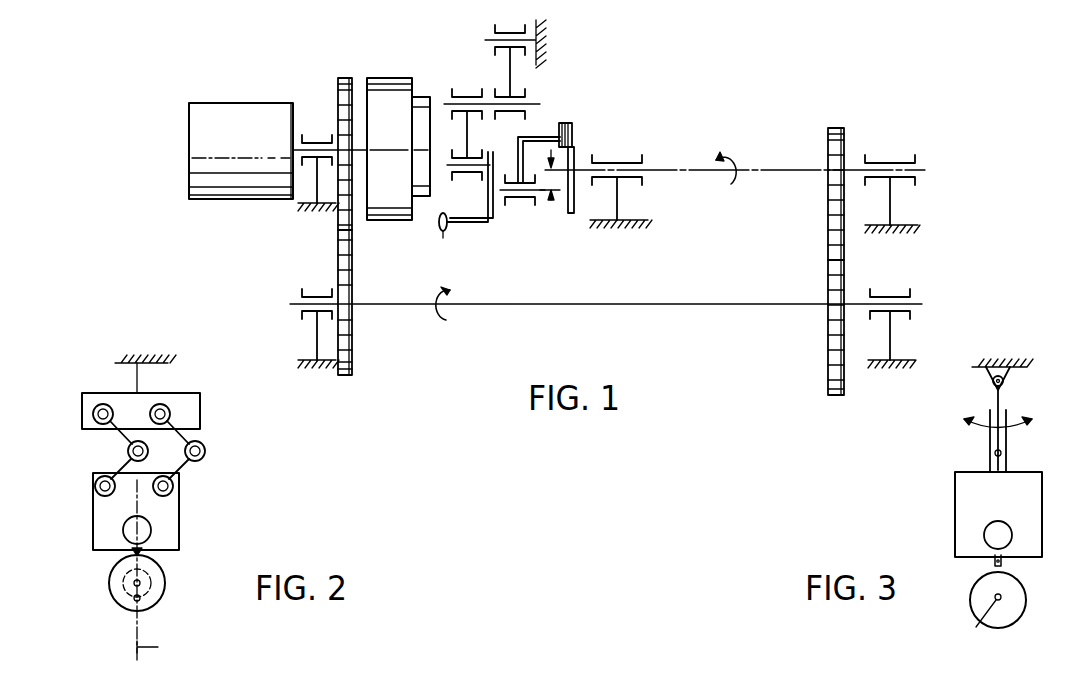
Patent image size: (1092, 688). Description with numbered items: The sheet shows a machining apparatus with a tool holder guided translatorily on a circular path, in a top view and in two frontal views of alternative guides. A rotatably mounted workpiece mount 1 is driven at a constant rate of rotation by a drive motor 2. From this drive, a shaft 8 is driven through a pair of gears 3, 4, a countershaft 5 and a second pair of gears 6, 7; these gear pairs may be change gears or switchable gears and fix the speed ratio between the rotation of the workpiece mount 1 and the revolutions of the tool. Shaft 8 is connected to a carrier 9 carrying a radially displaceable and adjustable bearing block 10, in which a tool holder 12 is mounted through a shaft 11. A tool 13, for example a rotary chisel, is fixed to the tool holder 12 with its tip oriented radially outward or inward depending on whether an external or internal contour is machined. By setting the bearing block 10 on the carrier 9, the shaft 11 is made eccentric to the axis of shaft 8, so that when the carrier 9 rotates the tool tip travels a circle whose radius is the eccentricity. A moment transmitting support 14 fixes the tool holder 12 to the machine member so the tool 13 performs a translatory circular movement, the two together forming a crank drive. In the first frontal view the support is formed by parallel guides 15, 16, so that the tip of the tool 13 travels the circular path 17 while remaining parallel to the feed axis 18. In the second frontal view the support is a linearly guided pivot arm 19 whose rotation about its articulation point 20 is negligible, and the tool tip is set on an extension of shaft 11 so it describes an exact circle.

In FIG. 1, the workpiece mount 1 is at (388, 90).
In FIG. 1, the drive motor 2 is at (213, 118).
In FIG. 1, the gear 3 is at (338, 218).
In FIG. 1, the gear 4 is at (350, 378).
In FIG. 1, the countershaft 5 is at (600, 306).
In FIG. 1, the gear 6 is at (836, 397).
In FIG. 1, the gear 7 is at (834, 128).
In FIG. 1, the shaft 8 is at (783, 168).
In FIG. 3, the shaft 8 is at (986, 622).
In FIG. 1, the carrier 9 is at (575, 150).
In FIG. 1, the bearing block 10 is at (560, 132).
In FIG. 1, the shaft 11 is at (497, 205).
In FIG. 1, the tool holder 12 is at (470, 224).
In FIG. 2, the tool holder 12 is at (165, 515).
In FIG. 3, the tool holder 12 is at (960, 486).
In FIG. 1, the tool 13 is at (440, 234).
In FIG. 2, the tool 13 is at (161, 557).
In FIG. 3, the tool 13 is at (992, 564).
In FIG. 1, the moment transmitting support 14 is at (476, 86).
In FIG. 2, the parallel guide 15 is at (128, 454).
In FIG. 2, the parallel guide 16 is at (205, 448).
In FIG. 2, the circular path 17 is at (163, 578).
In FIG. 3, the circular path 17 is at (975, 605).
In FIG. 2, the feed axis 18 is at (158, 647).
In FIG. 3, the pivot arm 19 is at (1010, 440).
In FIG. 3, the articulation point 20 is at (1006, 381).